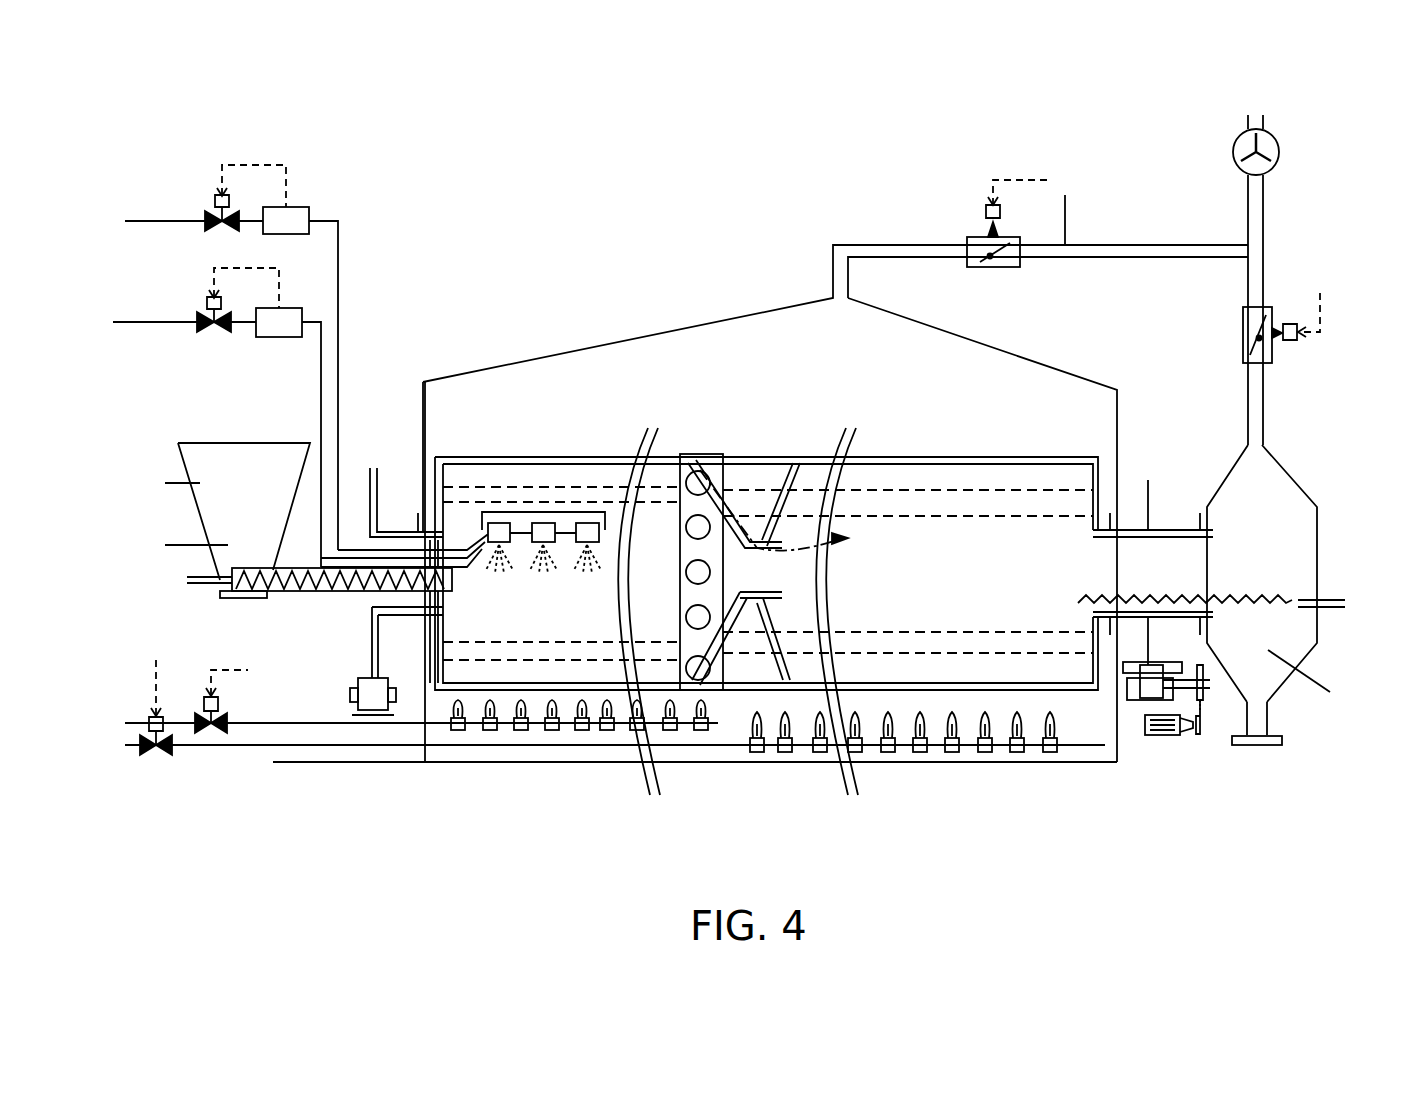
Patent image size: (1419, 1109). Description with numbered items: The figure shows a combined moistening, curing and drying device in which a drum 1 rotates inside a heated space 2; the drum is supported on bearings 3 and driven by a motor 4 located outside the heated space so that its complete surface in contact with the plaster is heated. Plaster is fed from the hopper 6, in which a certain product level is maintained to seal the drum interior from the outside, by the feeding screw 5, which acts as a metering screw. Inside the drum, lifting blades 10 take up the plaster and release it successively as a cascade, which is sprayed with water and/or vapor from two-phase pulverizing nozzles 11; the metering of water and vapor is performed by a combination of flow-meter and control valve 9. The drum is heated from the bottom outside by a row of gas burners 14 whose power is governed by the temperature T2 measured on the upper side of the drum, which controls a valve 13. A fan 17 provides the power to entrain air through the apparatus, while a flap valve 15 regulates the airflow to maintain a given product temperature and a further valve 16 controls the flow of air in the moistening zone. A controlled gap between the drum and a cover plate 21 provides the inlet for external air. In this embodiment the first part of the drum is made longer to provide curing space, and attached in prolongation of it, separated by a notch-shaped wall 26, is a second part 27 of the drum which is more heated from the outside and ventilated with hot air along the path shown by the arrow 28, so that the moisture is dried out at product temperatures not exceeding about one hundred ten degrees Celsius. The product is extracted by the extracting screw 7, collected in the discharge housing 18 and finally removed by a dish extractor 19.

The drum 1 is at (535, 458).
The heated space 2 is at (737, 393).
The bearings 3 is at (368, 700).
The motor 4 is at (1176, 740).
The feeding screw 5 is at (330, 592).
The hopper 6 is at (237, 515).
The extracting screw 7 is at (1280, 600).
The combination of flow-meter and control valve 9 is at (287, 178).
The lifting blades 10 is at (563, 658).
The two phase pulverizing nozzles 11 is at (488, 458).
The valve 13 is at (213, 735).
The gas burners 14 is at (490, 733).
The flap valve 15 is at (1243, 333).
The valve 16 is at (978, 237).
The fan 17 is at (1236, 138).
The discharge housing 18 is at (1280, 556).
The dish extractor 19 is at (1275, 746).
The cover plate 21 is at (420, 650).
The notch-shaped wall 26 is at (770, 640).
The second part of the drum 27 is at (948, 610).
The arrow 28 is at (692, 455).
The temperature T2 is at (808, 460).